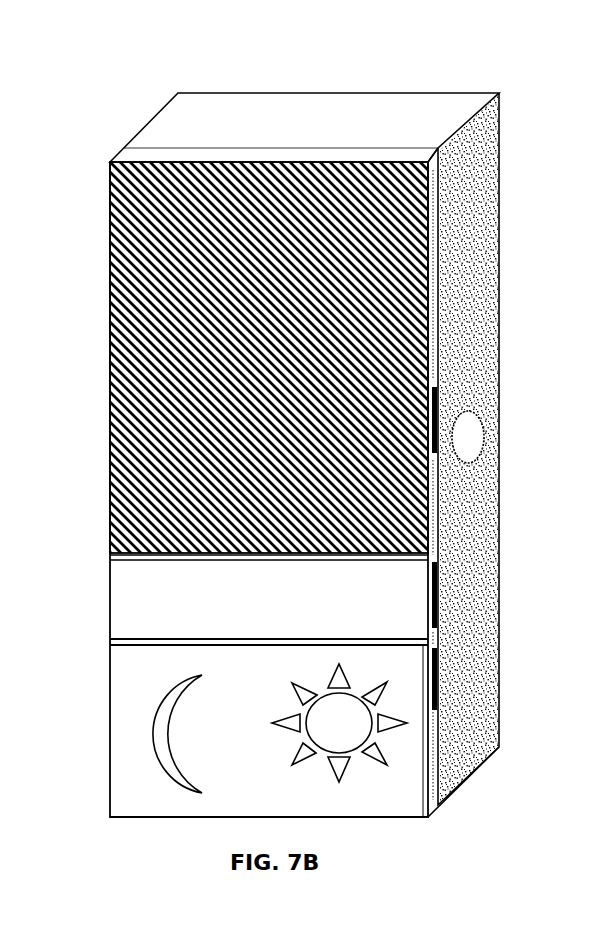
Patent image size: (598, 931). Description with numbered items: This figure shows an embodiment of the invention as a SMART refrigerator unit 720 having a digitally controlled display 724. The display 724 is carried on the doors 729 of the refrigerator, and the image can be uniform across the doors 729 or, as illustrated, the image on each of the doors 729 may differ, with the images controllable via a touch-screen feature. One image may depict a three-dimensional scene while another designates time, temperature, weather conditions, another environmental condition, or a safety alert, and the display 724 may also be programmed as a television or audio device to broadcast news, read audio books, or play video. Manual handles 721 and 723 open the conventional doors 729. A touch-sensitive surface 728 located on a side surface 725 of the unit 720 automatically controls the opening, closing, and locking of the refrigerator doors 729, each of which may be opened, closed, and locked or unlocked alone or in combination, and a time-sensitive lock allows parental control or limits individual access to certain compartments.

The SMART refrigerator unit 720 is at (425, 56).
The manual handle 721 is at (438, 405).
The manual handles 723 is at (433, 597).
The digitally controlled display 724 is at (383, 496).
The side surface 725 is at (470, 230).
The touch-sensitive surface 728 is at (470, 435).
The doors 729 is at (122, 655).